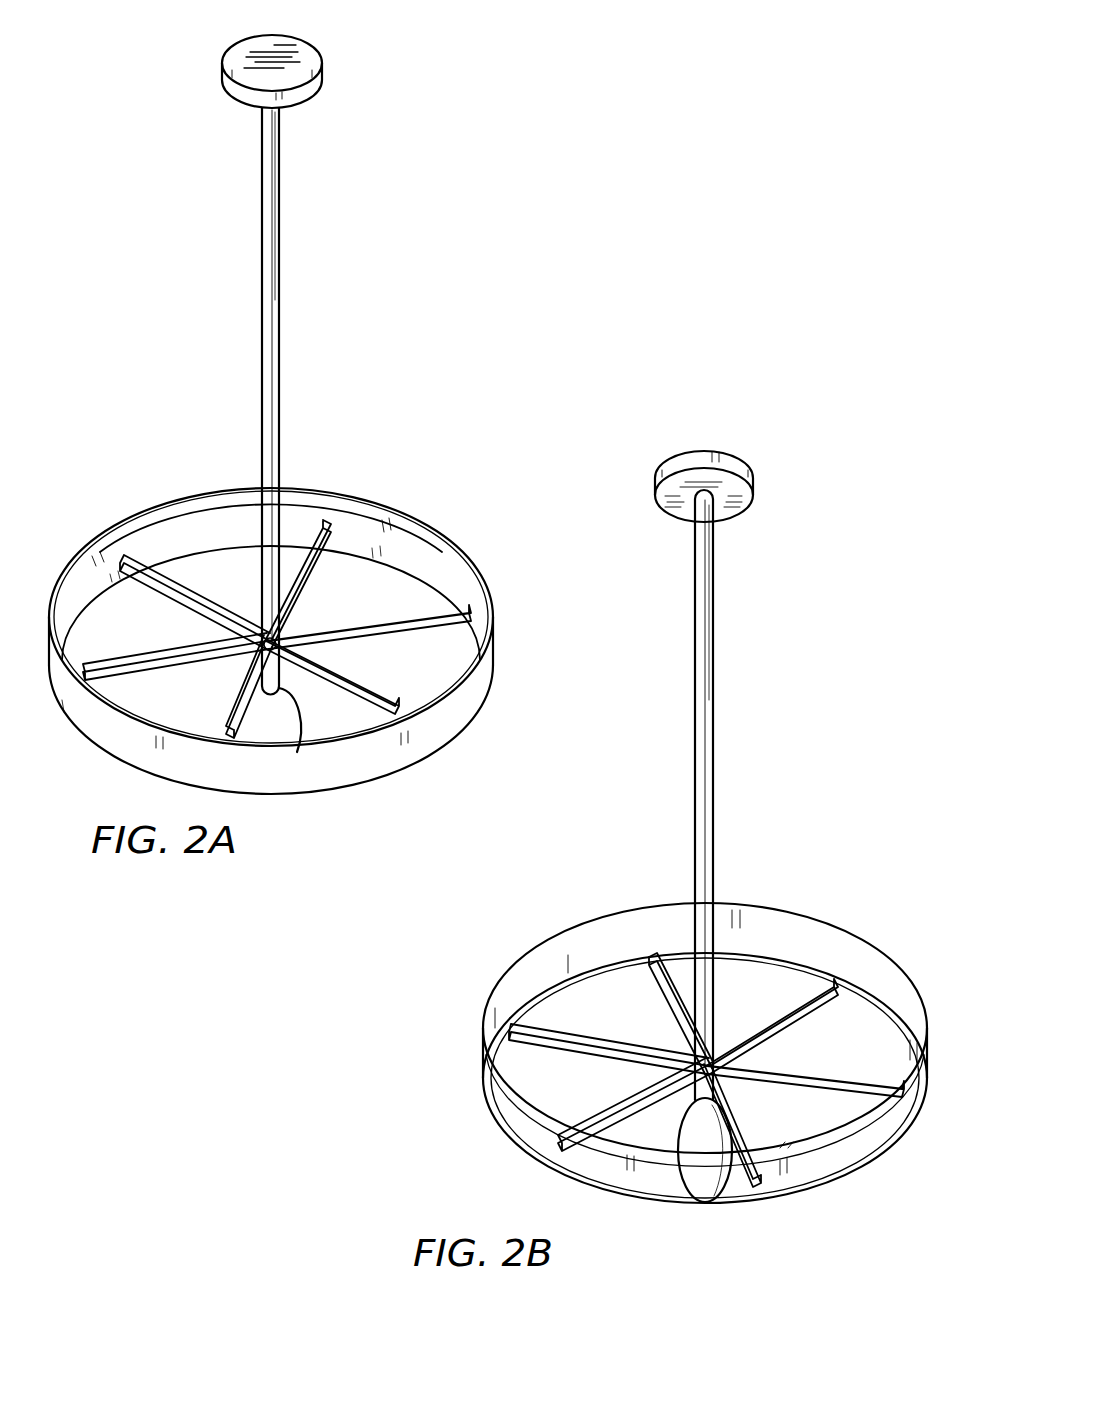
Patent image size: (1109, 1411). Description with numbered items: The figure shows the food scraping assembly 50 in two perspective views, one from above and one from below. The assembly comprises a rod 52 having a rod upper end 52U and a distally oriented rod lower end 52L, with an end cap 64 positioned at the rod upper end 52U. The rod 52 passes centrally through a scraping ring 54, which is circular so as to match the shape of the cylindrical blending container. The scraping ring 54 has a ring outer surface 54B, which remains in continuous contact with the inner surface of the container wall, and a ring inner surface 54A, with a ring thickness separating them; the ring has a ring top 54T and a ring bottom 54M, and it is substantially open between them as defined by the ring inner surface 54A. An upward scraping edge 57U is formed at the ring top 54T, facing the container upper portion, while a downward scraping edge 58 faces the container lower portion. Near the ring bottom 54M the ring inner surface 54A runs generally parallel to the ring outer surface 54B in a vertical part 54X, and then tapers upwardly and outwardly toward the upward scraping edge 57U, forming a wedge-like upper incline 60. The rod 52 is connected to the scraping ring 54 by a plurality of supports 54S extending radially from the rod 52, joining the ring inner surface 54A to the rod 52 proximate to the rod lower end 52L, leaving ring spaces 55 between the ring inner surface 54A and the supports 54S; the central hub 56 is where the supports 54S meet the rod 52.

In FIG. 2A, the food scraping assembly 50 is at (432, 404).
In FIG. 2B, the food scraping assembly 50 is at (845, 714).
In FIG. 2A, the rod 52 is at (281, 312).
In FIG. 2B, the rod 52 is at (714, 728).
In FIG. 2A, the rod upper end 52U is at (281, 116).
In FIG. 2B, the rod upper end 52U is at (716, 505).
In FIG. 2A, the rod lower end 52L is at (298, 740).
In FIG. 2B, the rod lower end 52L is at (676, 1130).
In FIG. 2A, the scraping ring 54 is at (278, 610).
In FIG. 2B, the scraping ring 54 is at (648, 1037).
In FIG. 2A, the ring top 54T is at (322, 490).
In FIG. 2B, the ring top 54T is at (663, 902).
In FIG. 2B, the ring outer surface 54B is at (592, 943).
In FIG. 2A, the ring bottom 54M is at (446, 746).
In FIG. 2B, the ring bottom 54M is at (785, 1200).
In FIG. 2A, the vertical part 54X is at (413, 562).
In FIG. 2B, the vertical part 54X is at (838, 1160).
In FIG. 2A, the supports 54S is at (205, 592).
In FIG. 2B, the supports 54S is at (565, 1037).
In FIG. 2B, the ring inner surface 54A is at (497, 1077).
In FIG. 2A, the ring spaces 55 is at (375, 572).
In FIG. 2B, the ring spaces 55 is at (760, 990).
In FIG. 2A, the hub 56 is at (253, 630).
In FIG. 2A, the upward scraping edge 57U is at (58, 596).
In FIG. 2B, the upward scraping edge 57U is at (608, 912).
In FIG. 2A, the downward scraping edge 58 is at (80, 735).
In FIG. 2B, the downward scraping edge 58 is at (570, 990).
In FIG. 2A, the upper incline 60 is at (472, 583).
In FIG. 2A, the end cap 64 is at (312, 47).
In FIG. 2B, the end cap 64 is at (740, 462).